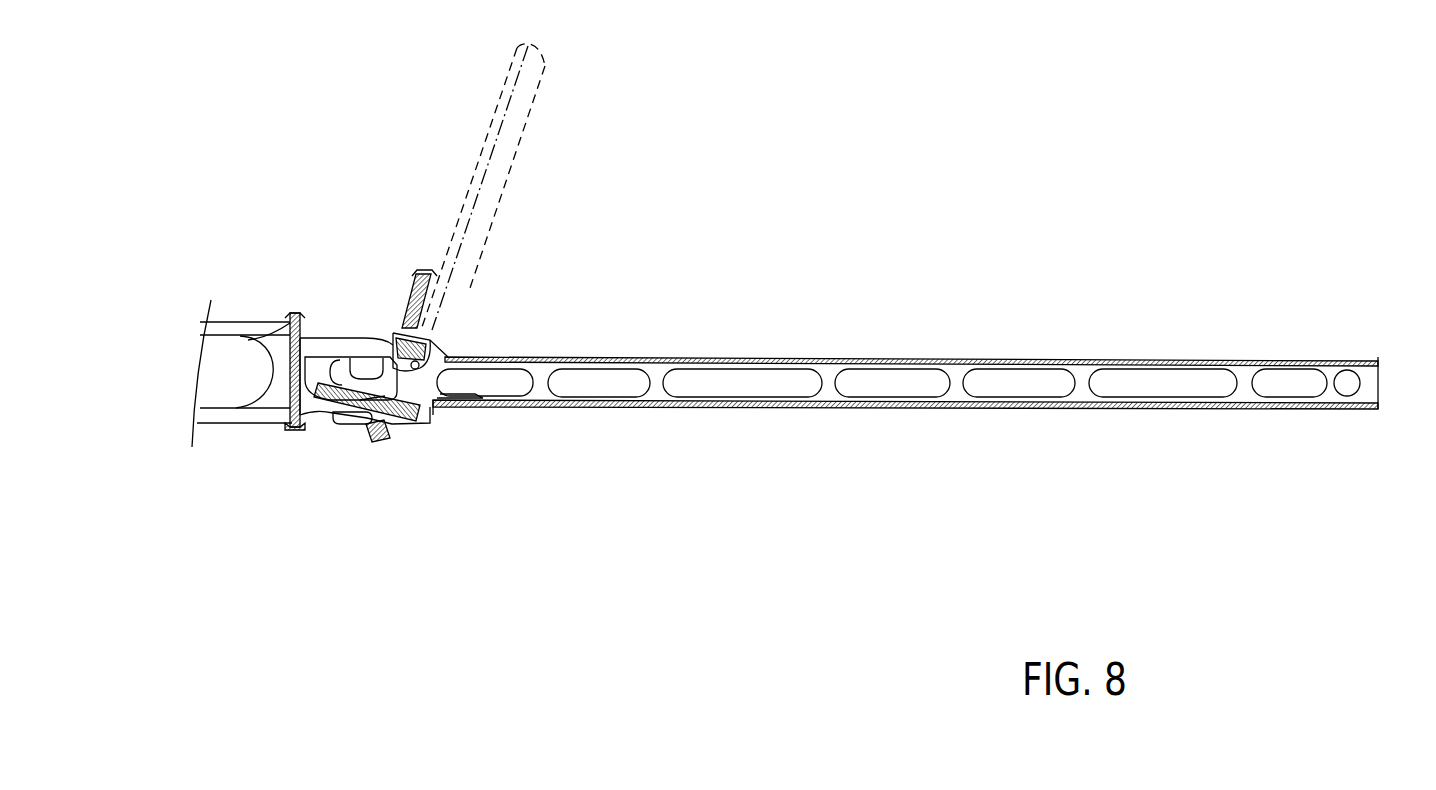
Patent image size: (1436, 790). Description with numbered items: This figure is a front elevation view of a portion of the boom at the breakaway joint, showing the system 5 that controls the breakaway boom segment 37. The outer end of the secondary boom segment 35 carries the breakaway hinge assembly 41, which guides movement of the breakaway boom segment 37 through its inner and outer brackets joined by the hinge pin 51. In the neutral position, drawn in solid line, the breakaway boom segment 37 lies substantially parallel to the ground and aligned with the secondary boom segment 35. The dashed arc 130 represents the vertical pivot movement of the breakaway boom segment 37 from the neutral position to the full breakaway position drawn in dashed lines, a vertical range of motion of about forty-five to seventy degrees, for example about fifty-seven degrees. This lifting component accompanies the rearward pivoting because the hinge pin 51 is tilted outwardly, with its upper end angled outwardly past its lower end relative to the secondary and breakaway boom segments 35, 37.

The system 5 is at (386, 301).
The secondary boom segment 35 is at (241, 327).
The breakaway boom segment 37 is at (822, 408).
The breakaway hinge assembly 41 is at (339, 459).
The hinge pin 51 is at (388, 418).
The dashed arc 130 is at (451, 270).